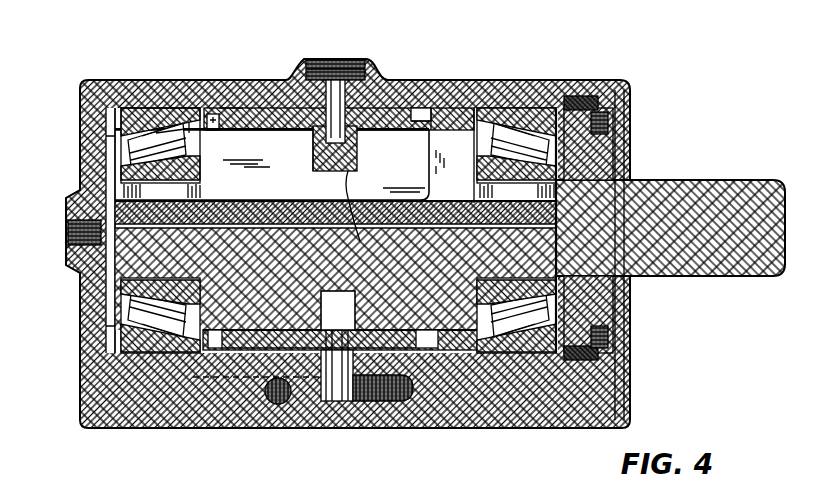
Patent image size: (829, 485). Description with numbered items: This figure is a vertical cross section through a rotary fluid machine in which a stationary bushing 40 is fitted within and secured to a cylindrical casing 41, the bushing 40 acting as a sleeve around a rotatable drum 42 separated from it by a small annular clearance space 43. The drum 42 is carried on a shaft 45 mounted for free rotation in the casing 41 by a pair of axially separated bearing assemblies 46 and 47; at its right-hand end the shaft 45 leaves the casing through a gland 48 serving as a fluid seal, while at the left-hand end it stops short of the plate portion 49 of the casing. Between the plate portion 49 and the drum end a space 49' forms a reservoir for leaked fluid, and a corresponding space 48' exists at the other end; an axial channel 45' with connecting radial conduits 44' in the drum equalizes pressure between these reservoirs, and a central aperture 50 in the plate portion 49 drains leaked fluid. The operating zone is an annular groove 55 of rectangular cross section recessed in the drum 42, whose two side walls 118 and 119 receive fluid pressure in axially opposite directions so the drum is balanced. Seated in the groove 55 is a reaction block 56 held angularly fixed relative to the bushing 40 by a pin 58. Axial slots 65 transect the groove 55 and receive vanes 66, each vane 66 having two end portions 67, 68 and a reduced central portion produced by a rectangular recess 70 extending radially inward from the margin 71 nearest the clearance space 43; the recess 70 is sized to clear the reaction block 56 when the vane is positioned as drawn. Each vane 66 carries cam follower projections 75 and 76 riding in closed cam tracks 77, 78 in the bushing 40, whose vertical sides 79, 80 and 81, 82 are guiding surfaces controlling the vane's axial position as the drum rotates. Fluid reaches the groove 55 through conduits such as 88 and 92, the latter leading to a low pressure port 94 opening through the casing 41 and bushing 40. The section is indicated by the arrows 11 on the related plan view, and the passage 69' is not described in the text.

The section line 11 is at (327, 18).
The stationary bushing 40 is at (252, 100).
The cylindrical casing 41 is at (466, 86).
The rotatable drum 42 is at (235, 342).
The clearance space 43 is at (262, 338).
The radial conduits 44' is at (582, 228).
The shaft 45 is at (670, 213).
The axial channel 45' is at (335, 265).
The bearing assembly 46 is at (555, 124).
The bearing assembly 47 is at (100, 130).
The gland 48 is at (617, 255).
The space or reservoir 48' is at (636, 228).
The plate portion 49 is at (62, 252).
The space or reservoir 49' is at (69, 244).
The central aperture 50 is at (66, 234).
The annular groove 55 is at (350, 161).
The reaction block 56 is at (342, 179).
The pin 58 is at (338, 60).
The axial slot 65 is at (434, 161).
The vane 66 is at (262, 210).
The end portion 67 is at (177, 176).
The end portion 68 is at (432, 137).
The passage 69' is at (368, 230).
The recess or notch 70 is at (311, 153).
The margin 71 is at (272, 125).
The cam follower projection 75 is at (205, 105).
The cam follower projection 76 is at (418, 101).
The cam track 77 is at (183, 112).
The cam track 78 is at (406, 102).
The vertical side 79 is at (185, 102).
The vertical side 80 is at (233, 100).
The vertical side 81 is at (402, 104).
The vertical side 82 is at (447, 103).
The conduit 88 is at (302, 421).
The conduit 92 is at (387, 395).
The low pressure port 94 is at (336, 360).
The side wall 118 is at (306, 131).
The side wall 119 is at (349, 133).